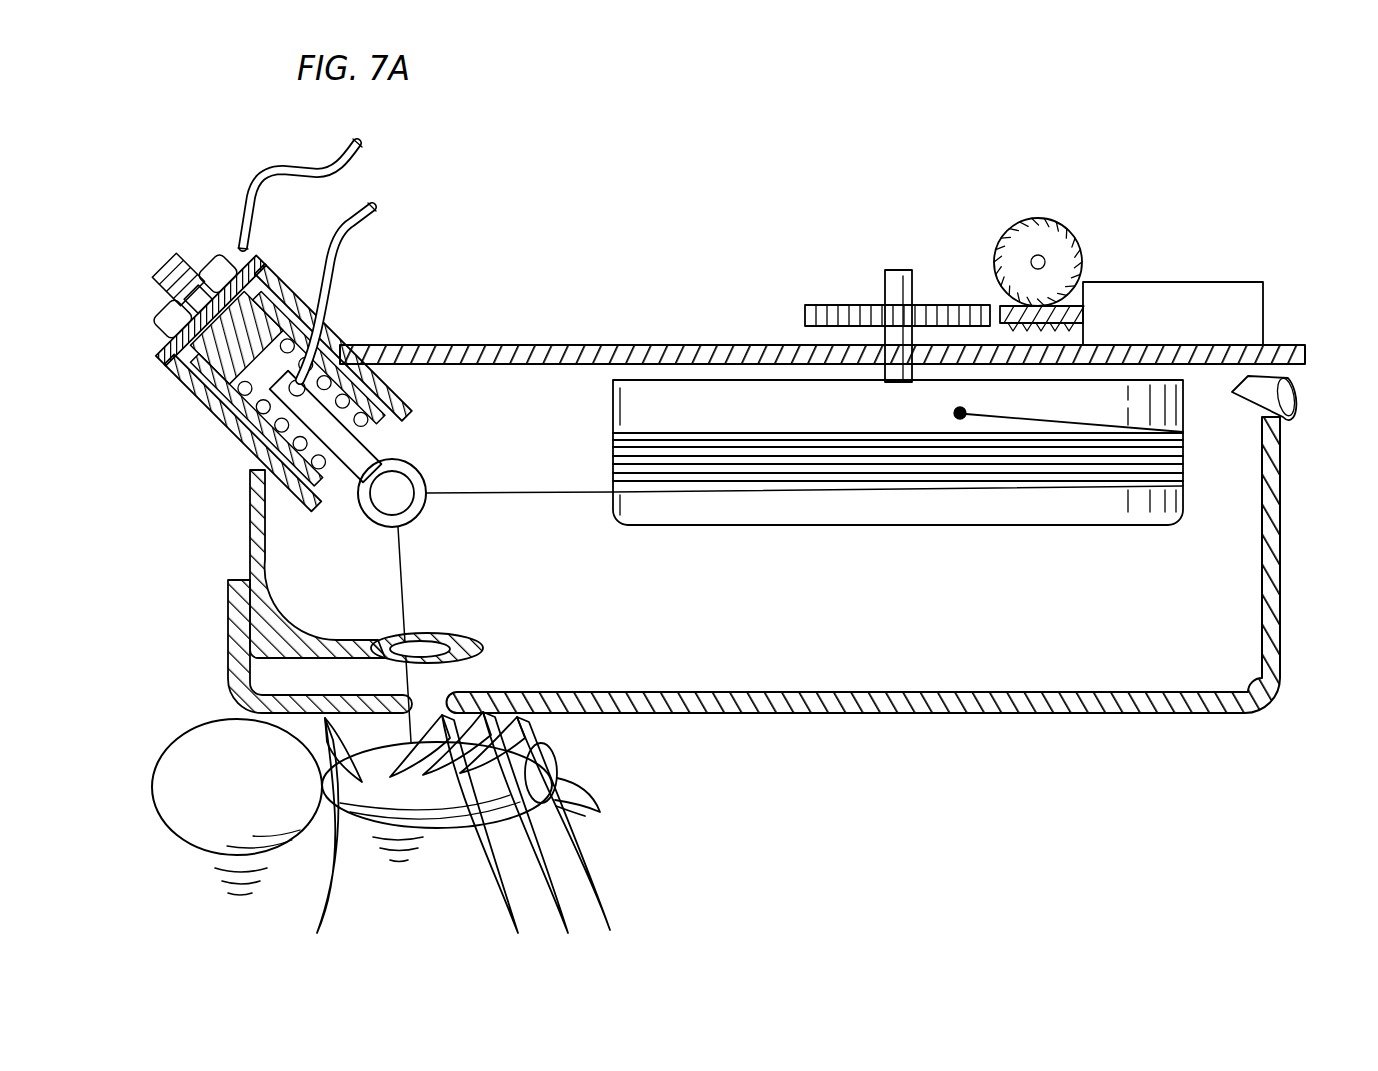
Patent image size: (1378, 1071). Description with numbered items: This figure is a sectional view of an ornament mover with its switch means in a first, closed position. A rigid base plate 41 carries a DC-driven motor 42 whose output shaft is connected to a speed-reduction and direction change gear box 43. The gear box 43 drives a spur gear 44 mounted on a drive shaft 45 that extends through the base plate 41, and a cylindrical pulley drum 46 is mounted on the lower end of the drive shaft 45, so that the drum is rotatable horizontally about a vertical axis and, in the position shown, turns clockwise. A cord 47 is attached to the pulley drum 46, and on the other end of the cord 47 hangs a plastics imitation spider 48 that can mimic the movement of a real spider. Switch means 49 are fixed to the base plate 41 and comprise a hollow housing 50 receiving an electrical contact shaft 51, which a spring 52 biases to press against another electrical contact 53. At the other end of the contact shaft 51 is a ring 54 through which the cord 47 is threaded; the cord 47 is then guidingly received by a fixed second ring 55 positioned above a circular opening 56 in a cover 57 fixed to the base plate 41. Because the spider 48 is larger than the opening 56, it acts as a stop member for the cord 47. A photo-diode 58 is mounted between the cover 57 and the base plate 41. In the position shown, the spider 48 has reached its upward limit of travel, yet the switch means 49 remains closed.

The base plate 41 is at (570, 345).
The motor 42 is at (1195, 302).
The speed-reduction and direction change gear box 43 is at (980, 208).
The spur gear 44 is at (815, 307).
The drive shaft 45 is at (895, 283).
The cylindrical pulley drum 46 is at (1105, 510).
The cord 47 is at (525, 488).
The imitation spider 48 is at (540, 775).
The switch means 49 is at (120, 260).
The hollow housing 50 is at (193, 392).
The electrical contact shaft 51 is at (248, 472).
The spring 52 is at (247, 418).
The electrical contact 53 is at (223, 345).
The ring 54 is at (423, 515).
The second ring 55 is at (460, 635).
The circular opening 56 is at (433, 685).
The cover 57 is at (1020, 713).
The photo-diode 58 is at (1300, 403).